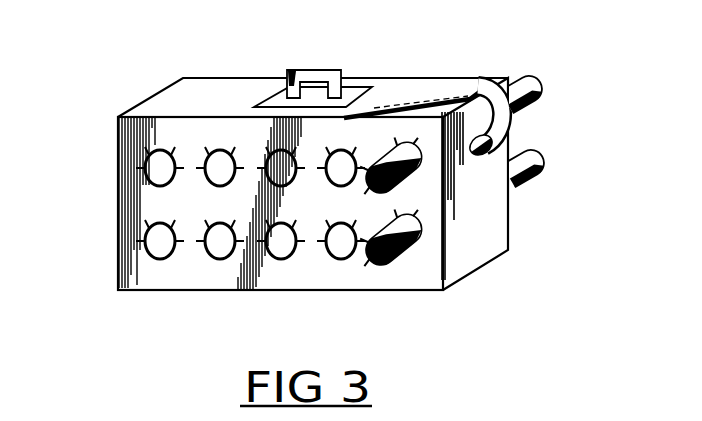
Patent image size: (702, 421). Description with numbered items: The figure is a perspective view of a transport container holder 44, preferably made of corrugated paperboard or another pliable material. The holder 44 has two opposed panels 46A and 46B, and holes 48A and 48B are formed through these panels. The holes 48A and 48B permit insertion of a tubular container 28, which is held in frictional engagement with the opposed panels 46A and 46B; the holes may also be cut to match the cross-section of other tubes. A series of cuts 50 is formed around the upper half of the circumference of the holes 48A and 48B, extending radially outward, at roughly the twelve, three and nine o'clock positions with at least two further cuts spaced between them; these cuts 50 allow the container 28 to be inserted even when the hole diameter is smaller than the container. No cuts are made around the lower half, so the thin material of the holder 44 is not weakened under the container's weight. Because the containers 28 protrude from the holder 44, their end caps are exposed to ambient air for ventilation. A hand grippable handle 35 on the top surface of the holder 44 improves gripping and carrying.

The container 28 is at (535, 152).
The hand grippable handle 35 is at (312, 70).
The transport container holder 44 is at (208, 95).
The opposed panel 46A is at (207, 272).
The opposed panel 46B is at (510, 222).
The hole 48A is at (413, 147).
The hole 48B is at (485, 97).
The cuts 50 is at (150, 163).